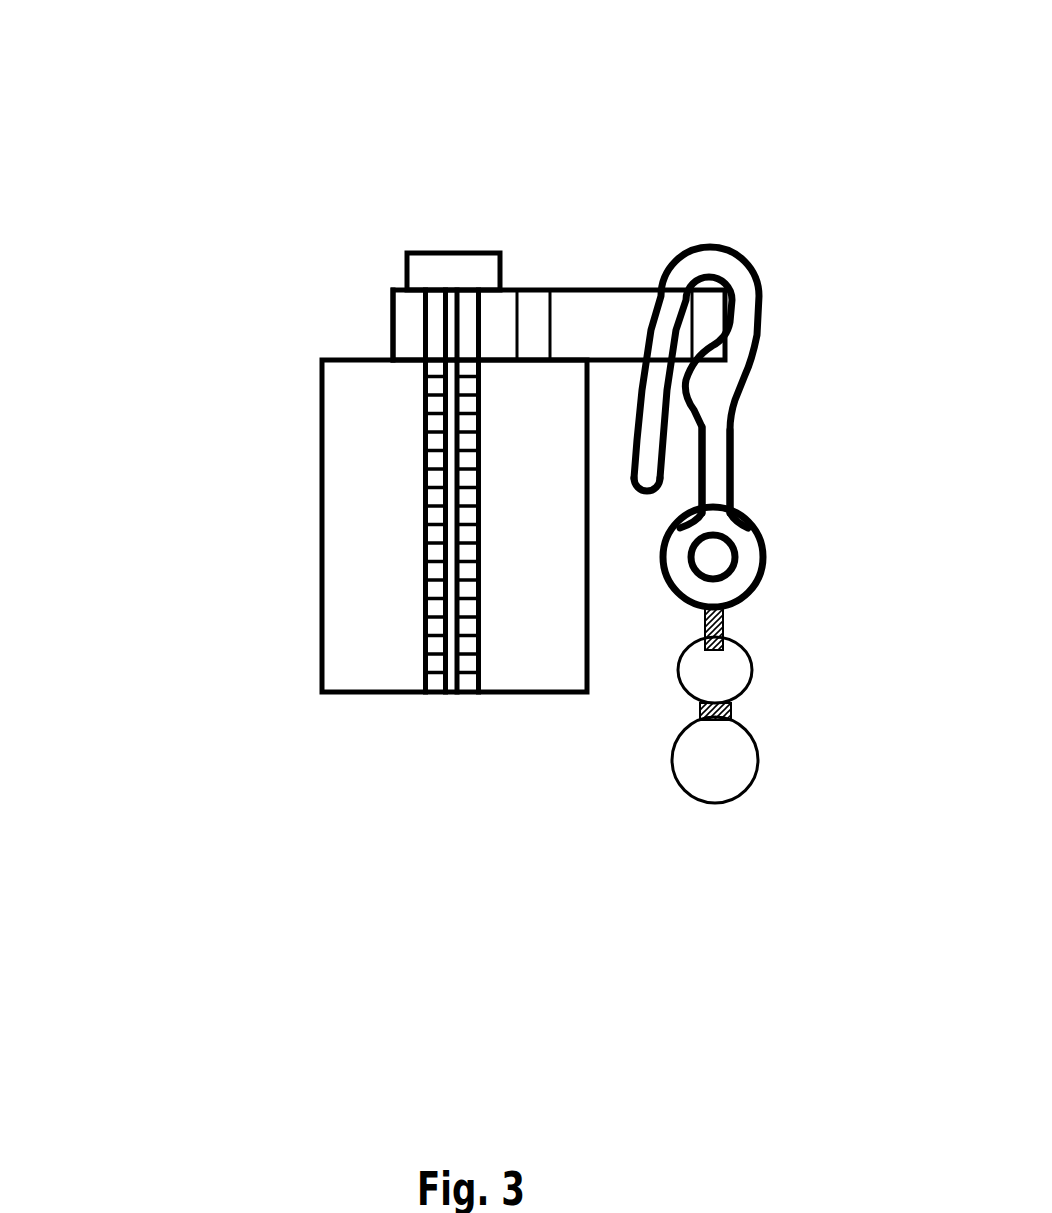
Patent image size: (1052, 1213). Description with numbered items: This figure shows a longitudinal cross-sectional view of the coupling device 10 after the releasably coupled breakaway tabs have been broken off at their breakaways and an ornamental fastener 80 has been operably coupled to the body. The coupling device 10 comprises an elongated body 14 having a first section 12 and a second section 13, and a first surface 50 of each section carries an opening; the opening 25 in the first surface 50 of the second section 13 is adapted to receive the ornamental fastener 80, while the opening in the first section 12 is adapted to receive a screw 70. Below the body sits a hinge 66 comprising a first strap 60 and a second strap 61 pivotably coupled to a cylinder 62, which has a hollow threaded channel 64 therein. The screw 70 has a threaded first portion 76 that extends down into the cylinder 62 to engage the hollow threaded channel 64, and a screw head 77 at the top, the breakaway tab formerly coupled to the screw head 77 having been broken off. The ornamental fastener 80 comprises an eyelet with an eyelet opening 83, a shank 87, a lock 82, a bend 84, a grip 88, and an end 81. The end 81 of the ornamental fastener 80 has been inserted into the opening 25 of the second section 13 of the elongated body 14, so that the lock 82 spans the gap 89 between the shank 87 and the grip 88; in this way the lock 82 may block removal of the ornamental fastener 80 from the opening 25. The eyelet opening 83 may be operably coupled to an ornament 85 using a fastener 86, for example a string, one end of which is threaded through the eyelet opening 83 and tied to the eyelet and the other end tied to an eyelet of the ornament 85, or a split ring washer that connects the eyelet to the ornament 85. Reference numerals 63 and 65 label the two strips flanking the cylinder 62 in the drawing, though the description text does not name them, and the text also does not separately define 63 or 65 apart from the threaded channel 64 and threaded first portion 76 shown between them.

The coupling device 10 is at (112, 74).
The first section 12 is at (339, 327).
The second section 13 is at (618, 254).
The elongated body 14 is at (715, 219).
The opening 25 is at (578, 315).
The first surface 50 is at (392, 288).
The first strap 60 is at (552, 531).
The second strap 61 is at (395, 531).
The cylinder 62 is at (482, 720).
The left ladder strip 63 is at (443, 363).
The hollow threaded channel 64 is at (467, 540).
The right ladder strip 65 is at (497, 363).
The hinge 66 is at (270, 460).
The screw 70 is at (626, 110).
The threaded first portion 76 is at (447, 572).
The screw head 77 is at (453, 270).
The ornamental fastener 80 is at (788, 379).
The end 81 is at (633, 487).
The lock 82 is at (738, 412).
The eyelet opening 83 is at (733, 550).
The bend 84 is at (757, 268).
The ornament 85 is at (777, 701).
The fastener 86 is at (727, 620).
The shank 87 is at (717, 480).
The grip 88 is at (633, 417).
The gap 89 is at (665, 519).